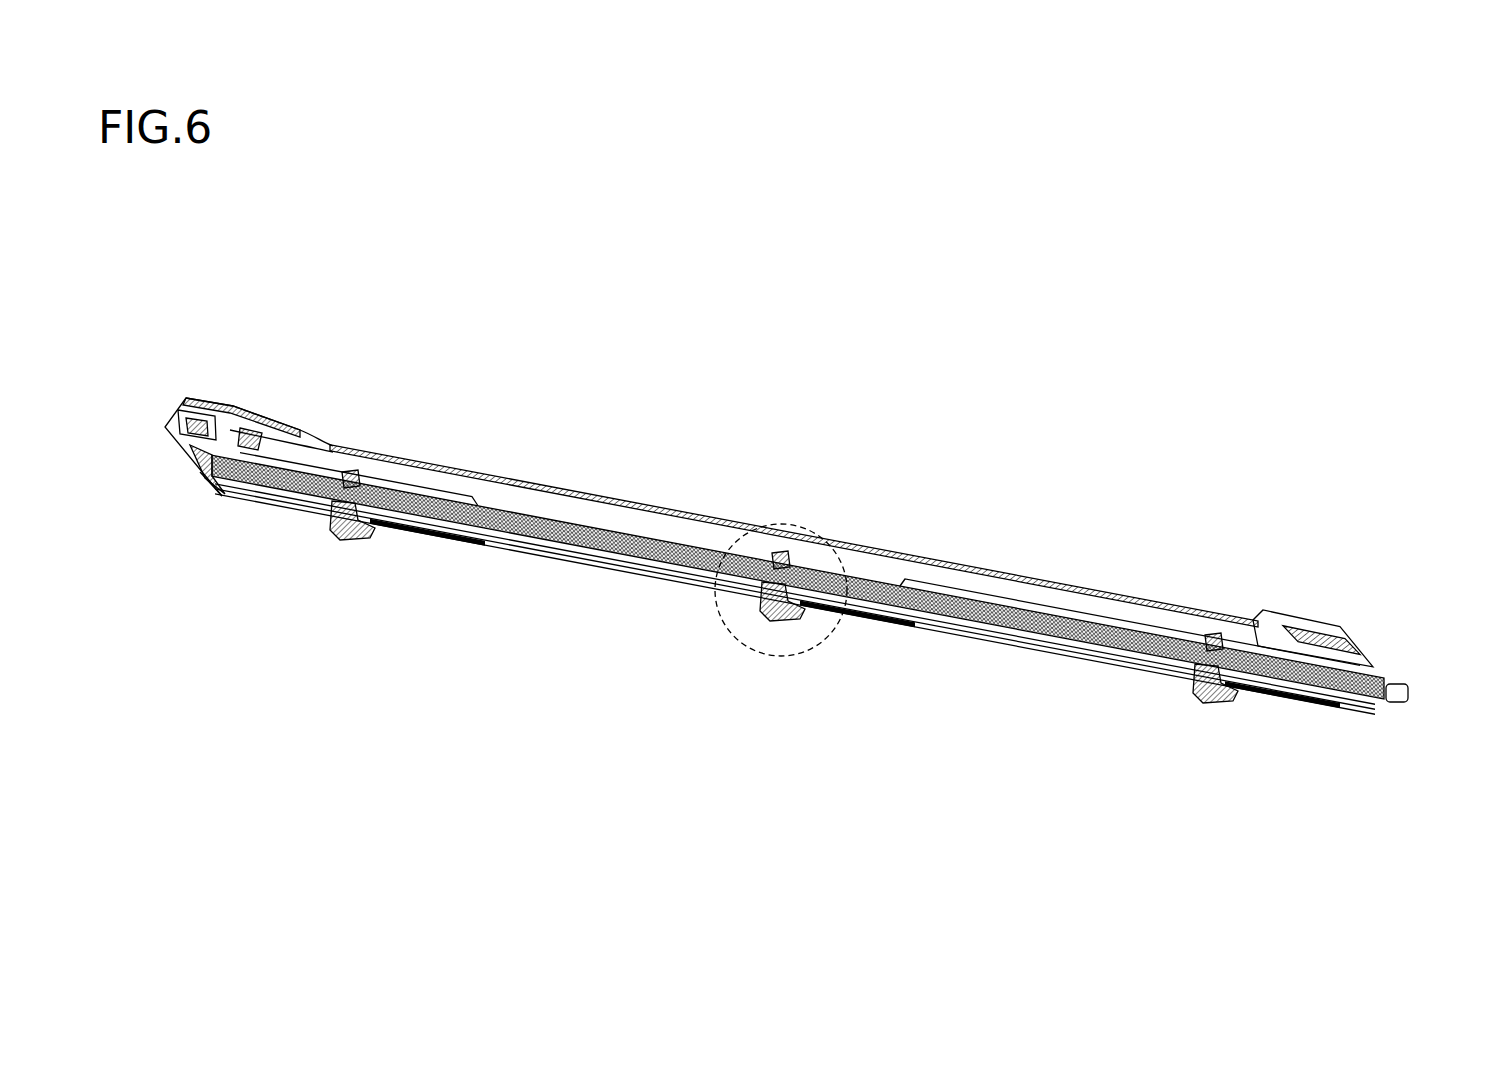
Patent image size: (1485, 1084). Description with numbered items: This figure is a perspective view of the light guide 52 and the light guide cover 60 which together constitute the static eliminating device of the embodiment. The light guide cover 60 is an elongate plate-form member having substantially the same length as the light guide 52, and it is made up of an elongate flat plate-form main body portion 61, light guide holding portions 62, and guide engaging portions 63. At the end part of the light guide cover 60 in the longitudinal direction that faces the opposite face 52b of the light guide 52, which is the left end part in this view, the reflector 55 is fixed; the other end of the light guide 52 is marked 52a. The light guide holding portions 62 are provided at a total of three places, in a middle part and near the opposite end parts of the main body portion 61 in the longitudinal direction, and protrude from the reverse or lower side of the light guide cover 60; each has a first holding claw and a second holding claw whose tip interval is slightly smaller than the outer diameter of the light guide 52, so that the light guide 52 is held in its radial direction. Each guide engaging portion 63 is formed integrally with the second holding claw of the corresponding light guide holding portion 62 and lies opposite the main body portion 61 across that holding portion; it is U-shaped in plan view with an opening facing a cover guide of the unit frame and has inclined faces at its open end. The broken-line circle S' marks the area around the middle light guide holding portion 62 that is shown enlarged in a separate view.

The light guide cover 60 is at (519, 432).
The main body portion 61 is at (1010, 575).
The light guide 52 is at (560, 545).
The reflector 55 is at (210, 398).
The opposite face 52b is at (200, 478).
The first end of wiper strip 52a is at (1398, 688).
The light guide holding portion 62 is at (352, 470).
The guide engaging portion 63 is at (345, 542).
The broken-line circle S' is at (795, 617).